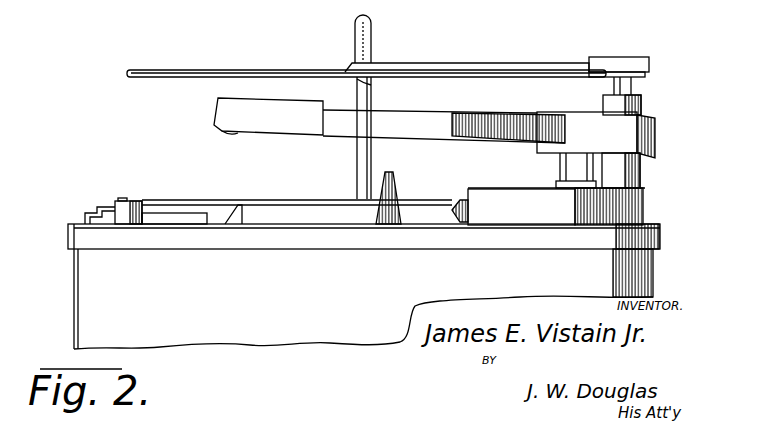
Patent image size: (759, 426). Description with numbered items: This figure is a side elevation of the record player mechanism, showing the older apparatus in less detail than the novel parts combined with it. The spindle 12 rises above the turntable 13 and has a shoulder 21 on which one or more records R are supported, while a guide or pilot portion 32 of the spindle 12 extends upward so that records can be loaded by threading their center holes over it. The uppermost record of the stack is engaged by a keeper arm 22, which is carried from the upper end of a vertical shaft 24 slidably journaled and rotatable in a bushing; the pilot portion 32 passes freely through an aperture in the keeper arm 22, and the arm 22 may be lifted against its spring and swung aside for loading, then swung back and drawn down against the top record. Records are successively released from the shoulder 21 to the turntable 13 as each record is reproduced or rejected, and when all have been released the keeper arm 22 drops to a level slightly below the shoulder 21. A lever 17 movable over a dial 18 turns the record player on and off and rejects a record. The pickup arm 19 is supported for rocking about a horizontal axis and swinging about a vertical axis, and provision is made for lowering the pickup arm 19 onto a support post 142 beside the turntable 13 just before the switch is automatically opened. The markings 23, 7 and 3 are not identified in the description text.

The record R is at (140, 77).
The pickup arm 19 is at (218, 110).
The guide or pilot portion 32 is at (357, 33).
The keeper arm 22 is at (470, 69).
The shoulder 21 is at (373, 86).
The head 23 is at (647, 56).
The vertical shaft 24 is at (630, 82).
The spindle 12 is at (362, 158).
The lever 17 is at (118, 200).
The dial 18 is at (176, 209).
The turntable 13 is at (268, 208).
The support post 142 is at (397, 197).
The section line 7 is at (548, 17).
The section line 3 is at (39, 208).